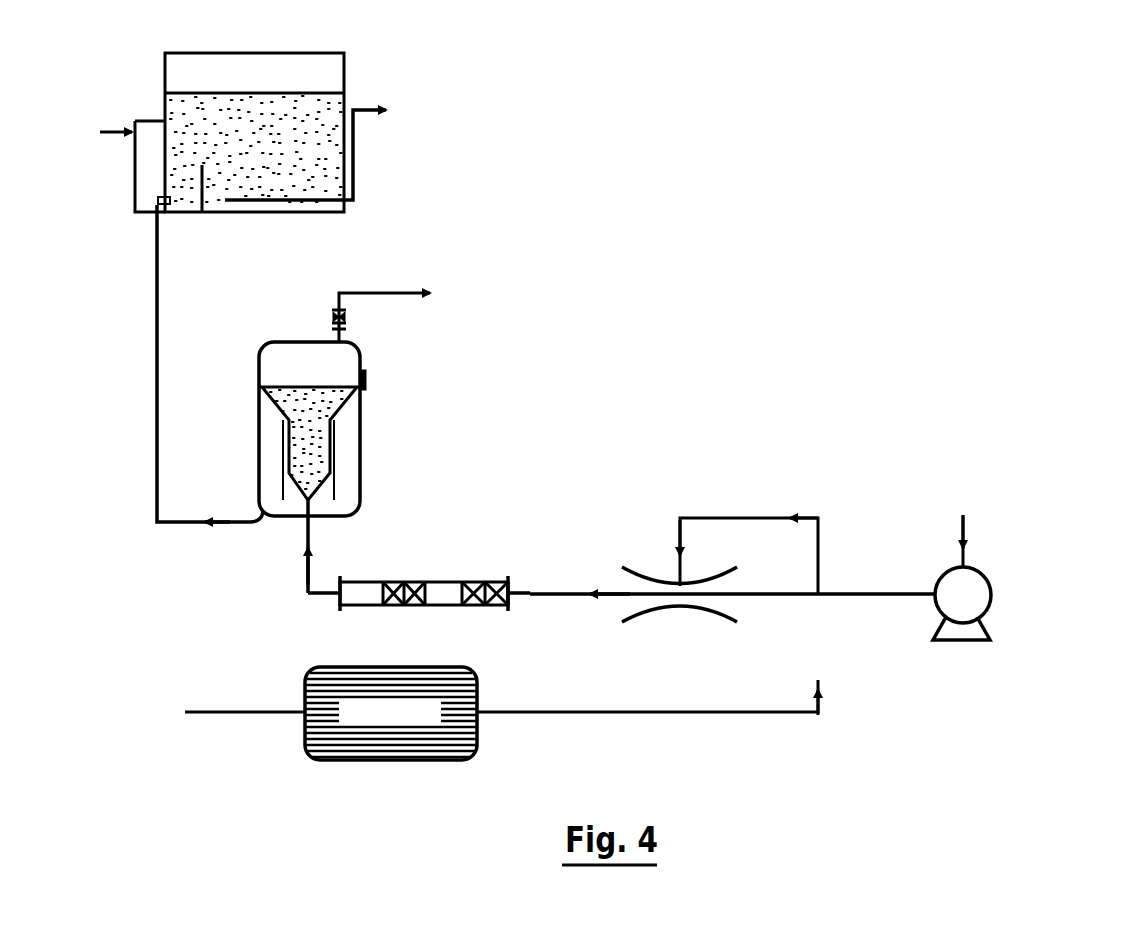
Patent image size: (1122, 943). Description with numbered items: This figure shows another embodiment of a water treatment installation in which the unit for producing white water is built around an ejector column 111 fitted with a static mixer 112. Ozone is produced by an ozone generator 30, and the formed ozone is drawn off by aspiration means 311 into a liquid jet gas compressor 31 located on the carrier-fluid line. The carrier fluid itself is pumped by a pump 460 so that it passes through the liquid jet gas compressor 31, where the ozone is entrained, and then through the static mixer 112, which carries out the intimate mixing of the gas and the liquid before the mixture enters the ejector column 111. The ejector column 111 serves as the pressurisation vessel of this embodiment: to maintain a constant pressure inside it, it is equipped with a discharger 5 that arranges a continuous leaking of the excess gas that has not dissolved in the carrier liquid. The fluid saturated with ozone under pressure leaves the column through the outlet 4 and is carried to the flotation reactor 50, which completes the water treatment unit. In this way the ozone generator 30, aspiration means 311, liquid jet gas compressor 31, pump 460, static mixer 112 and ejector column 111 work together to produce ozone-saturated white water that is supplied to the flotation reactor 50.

The flotation reactor 50 is at (162, 103).
The outlet 4 is at (240, 526).
The discharger 5 is at (332, 314).
The ejector column 111 is at (362, 420).
The static mixer 112 is at (412, 582).
The liquid jet gas compressor 31 is at (645, 578).
The aspiration means 311 is at (730, 518).
The pump 460 is at (978, 592).
The ozone generator 30 is at (305, 694).